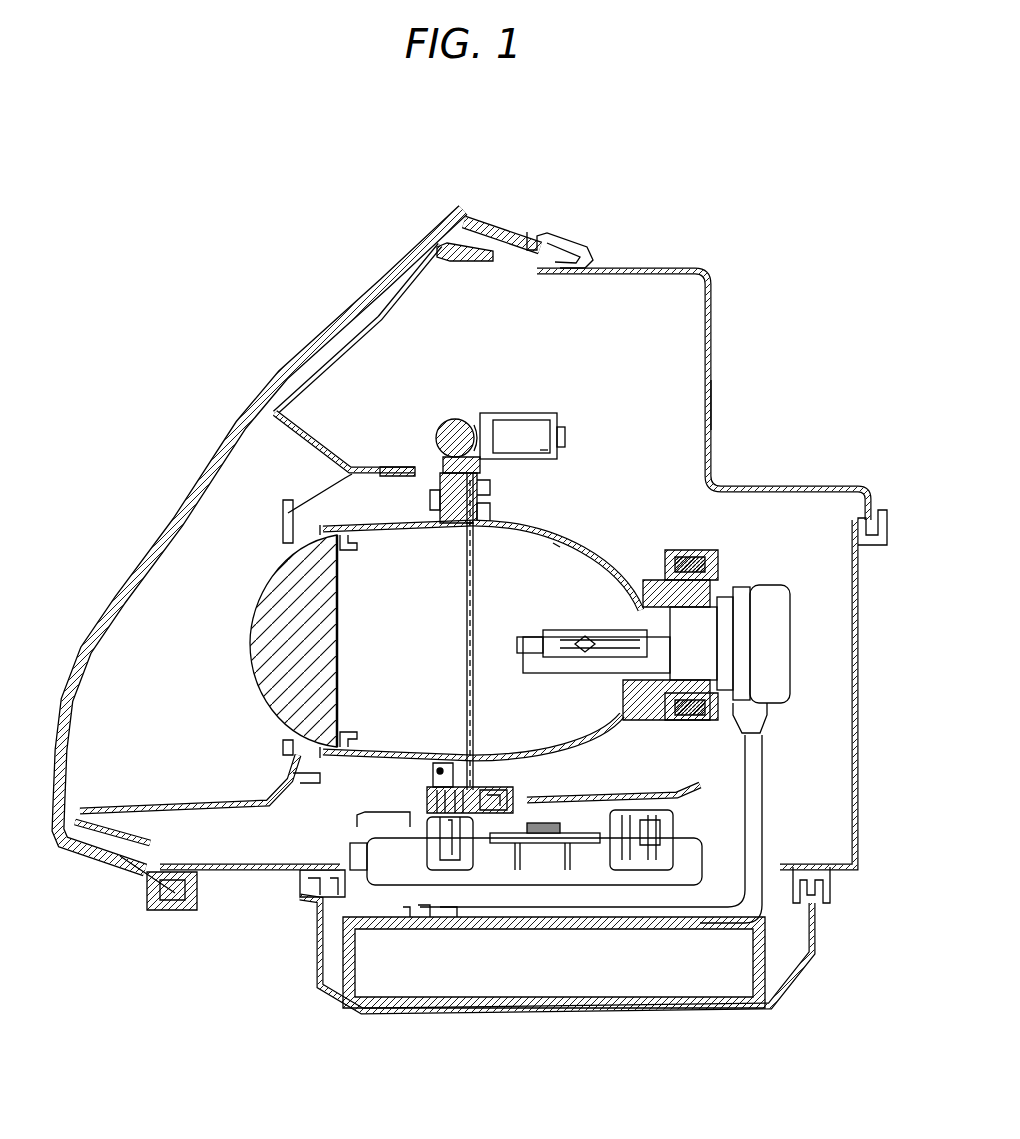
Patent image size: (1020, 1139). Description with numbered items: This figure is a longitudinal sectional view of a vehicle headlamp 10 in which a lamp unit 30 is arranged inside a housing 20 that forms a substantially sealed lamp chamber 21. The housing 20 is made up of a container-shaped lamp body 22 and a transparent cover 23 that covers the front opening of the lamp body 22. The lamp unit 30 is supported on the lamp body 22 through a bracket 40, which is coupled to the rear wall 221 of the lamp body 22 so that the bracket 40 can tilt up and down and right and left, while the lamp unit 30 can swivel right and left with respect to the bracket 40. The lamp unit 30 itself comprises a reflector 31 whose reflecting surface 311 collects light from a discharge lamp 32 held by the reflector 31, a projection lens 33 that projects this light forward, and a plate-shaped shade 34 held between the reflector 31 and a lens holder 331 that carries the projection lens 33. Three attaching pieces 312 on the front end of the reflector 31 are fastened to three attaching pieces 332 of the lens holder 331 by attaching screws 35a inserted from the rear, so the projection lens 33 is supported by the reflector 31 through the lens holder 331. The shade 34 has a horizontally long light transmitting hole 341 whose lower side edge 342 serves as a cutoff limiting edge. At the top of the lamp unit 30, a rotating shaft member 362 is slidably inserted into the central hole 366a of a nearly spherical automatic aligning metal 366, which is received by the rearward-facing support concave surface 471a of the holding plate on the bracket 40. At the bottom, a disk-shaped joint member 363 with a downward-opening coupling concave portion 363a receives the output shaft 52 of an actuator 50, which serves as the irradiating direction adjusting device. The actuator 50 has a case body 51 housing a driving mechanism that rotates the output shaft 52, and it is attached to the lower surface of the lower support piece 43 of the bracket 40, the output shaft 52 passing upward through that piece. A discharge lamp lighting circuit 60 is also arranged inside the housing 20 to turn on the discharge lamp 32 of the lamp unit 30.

The vehicle headlamp 10 is at (789, 160).
The housing 20 is at (560, 206).
The lamp chamber 21 is at (586, 319).
The lamp body 22 is at (593, 653).
The rear wall 221 is at (768, 395).
The transparent cover 23 is at (260, 560).
The lamp unit 30 is at (570, 623).
The reflector 31 is at (655, 652).
The reflecting surface 311 is at (543, 582).
The attaching pieces 312 is at (539, 495).
The discharge lamp 32 is at (593, 618).
The projection lens 33 is at (249, 641).
The lens holder 331 is at (207, 803).
The attaching pieces 332 is at (384, 393).
The shade 34 is at (396, 640).
The light transmitting hole 341 is at (433, 631).
The lower side edge 342 is at (416, 635).
The attaching screws 35a is at (492, 555).
The rotating shaft member 362 is at (469, 391).
The joint member 363 is at (542, 784).
The coupling concave portion 363a is at (435, 744).
The automatic aligning metal 366 is at (551, 415).
The central hole 366a is at (534, 383).
The bracket 40 is at (629, 643).
The lower support piece 43 is at (629, 815).
The support concave surface 471a is at (404, 418).
The actuator 50 is at (515, 855).
The case body 51 is at (545, 904).
The output shaft 52 is at (491, 786).
The discharge lamp lighting circuit 60 is at (554, 999).